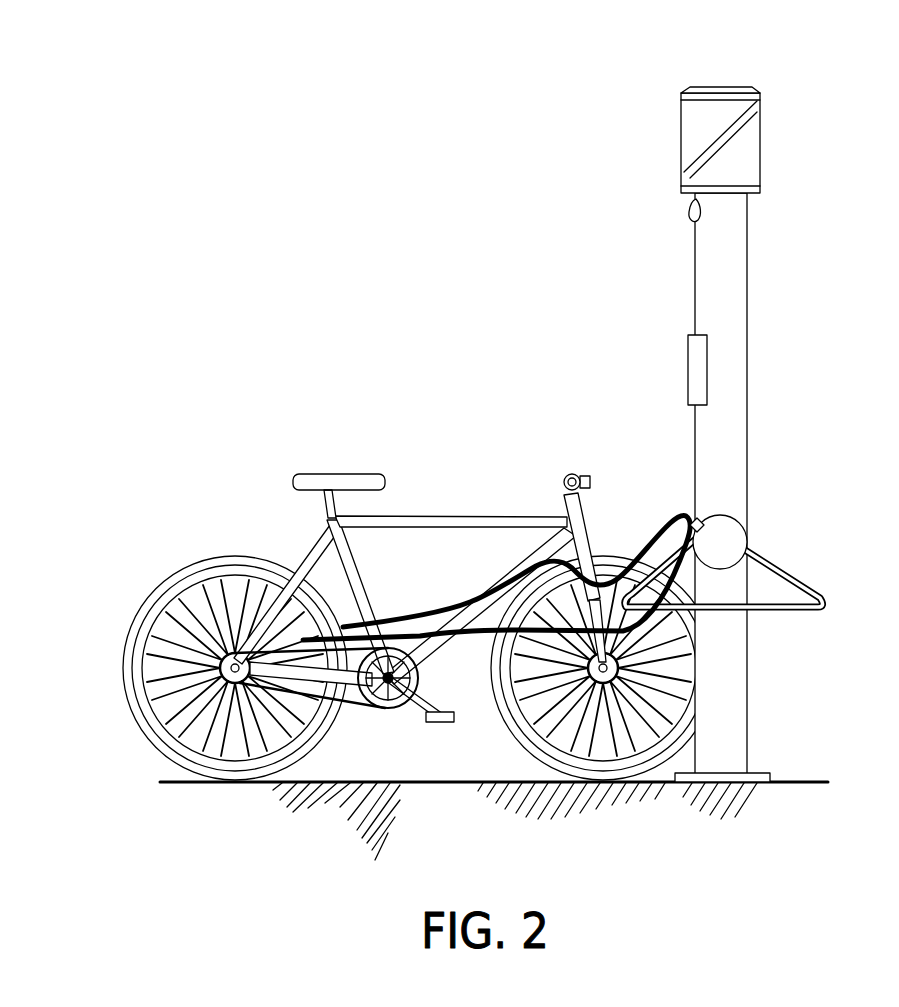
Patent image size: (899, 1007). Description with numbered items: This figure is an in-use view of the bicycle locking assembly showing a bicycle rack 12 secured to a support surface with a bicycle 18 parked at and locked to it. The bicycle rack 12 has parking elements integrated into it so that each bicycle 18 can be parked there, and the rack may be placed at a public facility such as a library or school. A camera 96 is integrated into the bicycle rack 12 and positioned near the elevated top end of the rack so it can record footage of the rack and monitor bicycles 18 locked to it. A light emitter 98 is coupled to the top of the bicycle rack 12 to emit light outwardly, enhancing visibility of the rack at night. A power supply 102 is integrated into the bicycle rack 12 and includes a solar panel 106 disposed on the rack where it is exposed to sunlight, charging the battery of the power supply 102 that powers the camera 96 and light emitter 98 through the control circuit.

The bicycle rack 12 is at (765, 373).
The bicycle 18 is at (336, 481).
The camera 96 is at (688, 212).
The light emitter 98 is at (751, 154).
The power supply 102 is at (743, 107).
The solar panel 106 is at (713, 87).